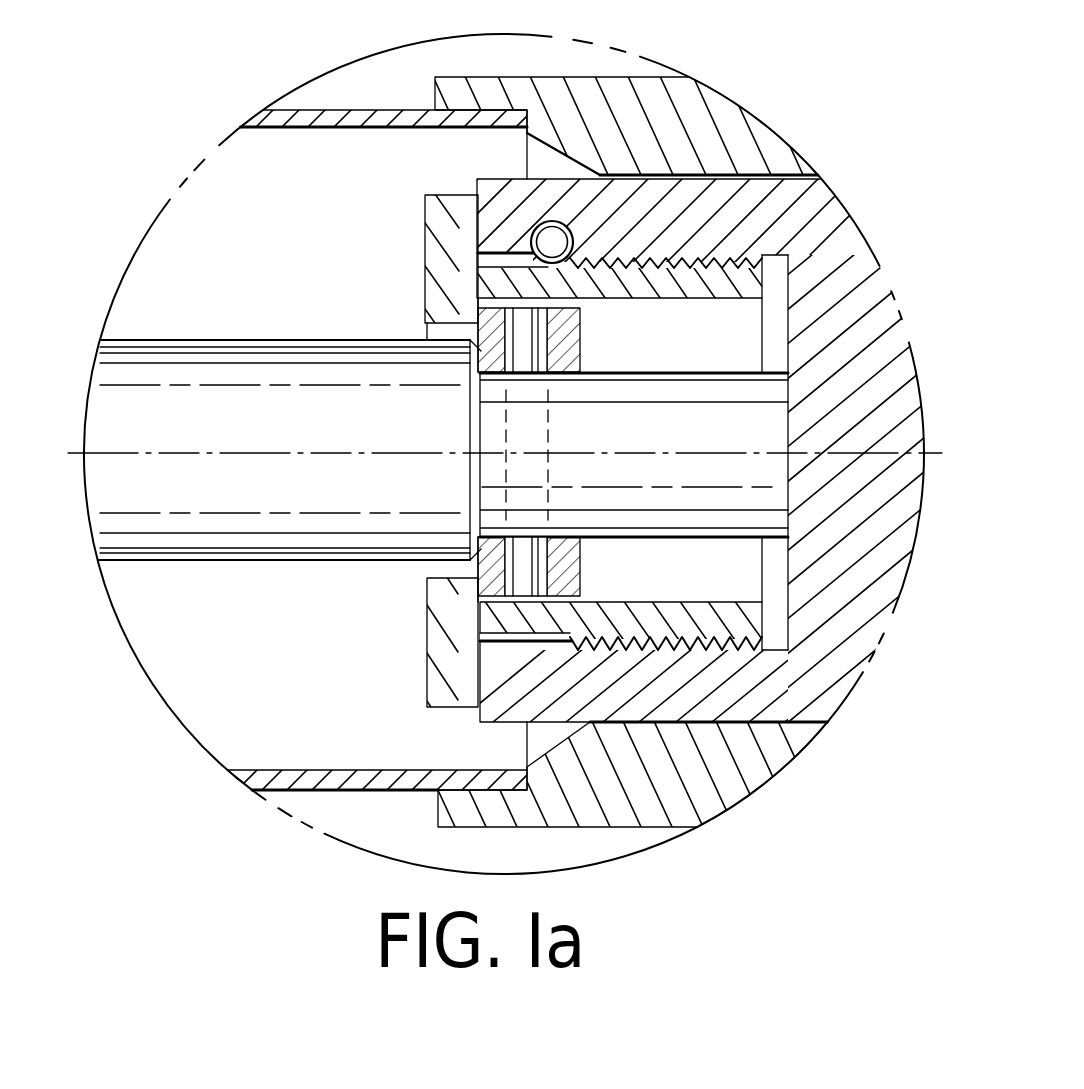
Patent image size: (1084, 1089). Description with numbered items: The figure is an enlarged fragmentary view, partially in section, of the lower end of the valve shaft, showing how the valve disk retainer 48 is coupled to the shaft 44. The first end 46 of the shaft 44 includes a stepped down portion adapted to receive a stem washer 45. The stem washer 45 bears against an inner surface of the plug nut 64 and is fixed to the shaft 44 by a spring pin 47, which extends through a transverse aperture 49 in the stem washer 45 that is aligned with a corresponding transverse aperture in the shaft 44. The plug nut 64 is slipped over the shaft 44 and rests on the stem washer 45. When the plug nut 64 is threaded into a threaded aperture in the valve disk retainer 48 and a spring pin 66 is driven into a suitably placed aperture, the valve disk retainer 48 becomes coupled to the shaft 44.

The shaft 44 is at (232, 341).
The stem washer 45 is at (583, 336).
The first end 46 is at (790, 428).
The spring pin 47 is at (525, 558).
The valve disk retainer 48 is at (868, 328).
The transverse aperture 49 is at (583, 318).
The plug nut 64 is at (425, 646).
The spring pin 66 is at (531, 241).